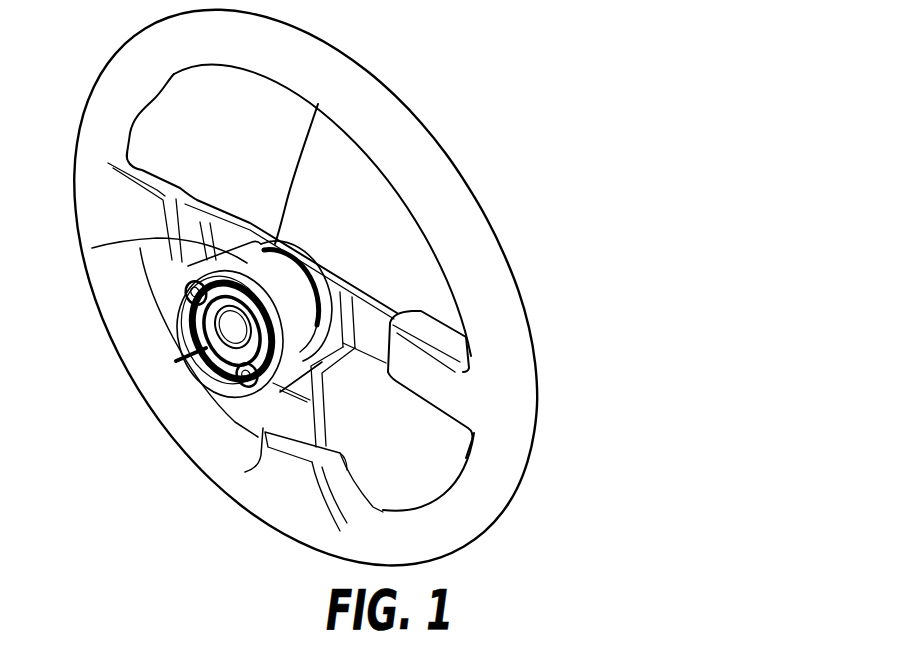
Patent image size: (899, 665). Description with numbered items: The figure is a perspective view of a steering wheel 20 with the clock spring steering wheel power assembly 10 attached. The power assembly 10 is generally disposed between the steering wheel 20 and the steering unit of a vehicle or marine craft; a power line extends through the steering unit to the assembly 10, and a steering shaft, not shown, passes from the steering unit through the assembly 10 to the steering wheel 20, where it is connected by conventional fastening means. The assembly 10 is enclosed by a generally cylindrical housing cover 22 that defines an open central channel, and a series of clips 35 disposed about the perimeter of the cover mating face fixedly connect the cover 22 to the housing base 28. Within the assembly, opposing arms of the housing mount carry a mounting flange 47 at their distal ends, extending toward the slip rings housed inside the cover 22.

The clock spring steering wheel power assembly 10 is at (232, 378).
The steering wheel 20 is at (490, 228).
The housing cover 22 is at (118, 249).
The housing base 28 is at (307, 290).
The clips 35 is at (275, 240).
The mounting flange 47 is at (188, 301).